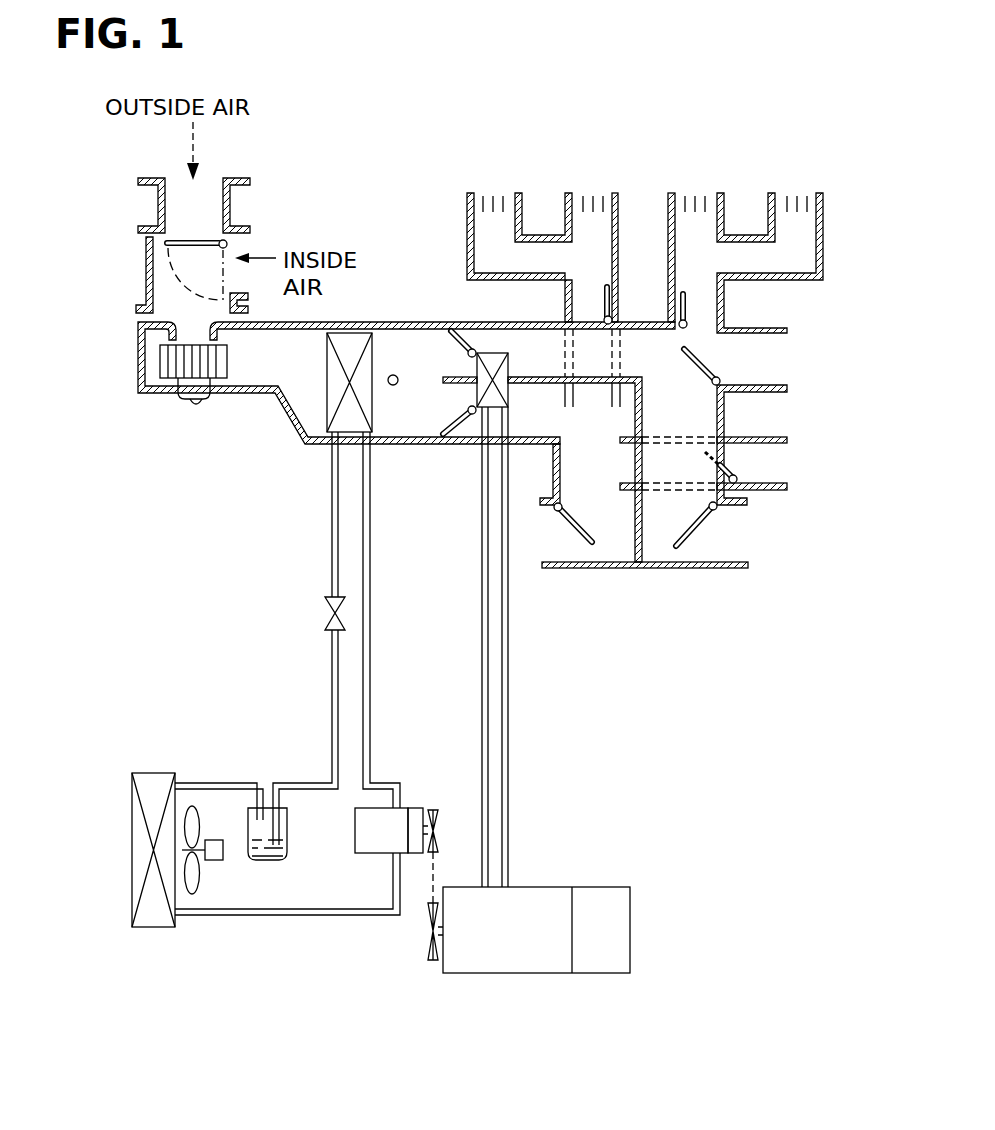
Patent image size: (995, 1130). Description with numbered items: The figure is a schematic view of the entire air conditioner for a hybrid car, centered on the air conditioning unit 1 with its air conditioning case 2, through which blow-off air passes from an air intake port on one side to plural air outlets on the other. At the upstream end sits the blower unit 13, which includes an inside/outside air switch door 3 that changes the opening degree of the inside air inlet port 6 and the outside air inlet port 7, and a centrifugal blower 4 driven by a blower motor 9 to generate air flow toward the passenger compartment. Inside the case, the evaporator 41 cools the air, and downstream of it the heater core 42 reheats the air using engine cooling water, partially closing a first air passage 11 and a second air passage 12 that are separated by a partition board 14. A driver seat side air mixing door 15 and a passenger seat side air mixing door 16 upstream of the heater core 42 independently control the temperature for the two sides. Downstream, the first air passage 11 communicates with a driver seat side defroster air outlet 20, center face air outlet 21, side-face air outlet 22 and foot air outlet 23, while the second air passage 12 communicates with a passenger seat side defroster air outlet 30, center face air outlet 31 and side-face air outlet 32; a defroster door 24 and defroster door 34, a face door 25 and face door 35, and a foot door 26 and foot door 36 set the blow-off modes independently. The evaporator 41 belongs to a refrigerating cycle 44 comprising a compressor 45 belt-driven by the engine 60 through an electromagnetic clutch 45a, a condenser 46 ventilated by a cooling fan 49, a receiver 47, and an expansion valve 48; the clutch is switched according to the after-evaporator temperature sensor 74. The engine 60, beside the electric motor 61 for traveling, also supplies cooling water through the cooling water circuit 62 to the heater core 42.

The air conditioning unit 1 is at (312, 203).
The air conditioning case 2 is at (378, 322).
The inside/outside air switch door 3 is at (197, 242).
The blower 4 is at (173, 358).
The inside air inlet port 6 is at (242, 246).
The outside air inlet port 7 is at (185, 195).
The blower motor 9 is at (183, 397).
The first air passage 11 is at (544, 345).
The second air passage 12 is at (538, 423).
The blower unit 13 is at (100, 313).
The partition board 14 is at (527, 375).
The driver seat side air mixing door 15 is at (448, 336).
The passenger seat side air mixing door 16 is at (443, 432).
The driver seat side defroster air outlet 20 is at (780, 347).
The driver seat side center face air outlet 21 is at (703, 198).
The driver seat side side-face air outlet 22 is at (801, 198).
The driver seat side foot air outlet 23 is at (740, 532).
The driver seat side defroster door 24 is at (705, 363).
The driver seat side face door 25 is at (683, 293).
The driver seat side foot door 26 is at (692, 535).
The passenger seat side defroster air outlet 30 is at (780, 455).
The passenger seat side center face air outlet 31 is at (598, 198).
The passenger seat side side-face air outlet 32 is at (502, 198).
The passenger seat side defroster door 34 is at (727, 468).
The passenger seat side face door 35 is at (607, 293).
The passenger seat side foot door 36 is at (580, 535).
The evaporator 41 is at (350, 425).
The heater core 42 is at (497, 407).
The refrigerating cycle 44 is at (243, 760).
The compressor 45 is at (377, 843).
The electromagnetic clutch 45a is at (416, 808).
The condenser 46 is at (156, 920).
The receiver 47 is at (265, 852).
The expansion valve 48 is at (325, 610).
The cooling fan 49 is at (192, 893).
The engine 60 is at (502, 962).
The electric motor 61 is at (598, 962).
The cooling water circuit 62 is at (510, 754).
The after-evaporator temperature sensor 74 is at (393, 385).